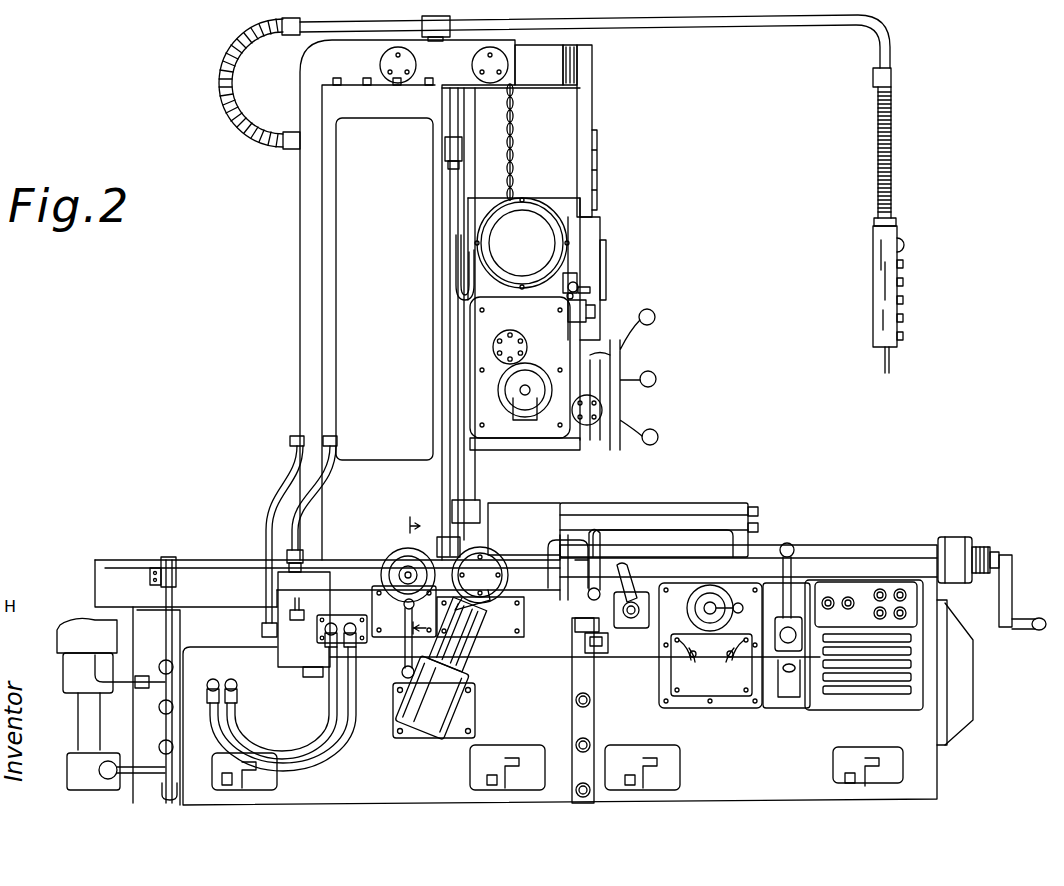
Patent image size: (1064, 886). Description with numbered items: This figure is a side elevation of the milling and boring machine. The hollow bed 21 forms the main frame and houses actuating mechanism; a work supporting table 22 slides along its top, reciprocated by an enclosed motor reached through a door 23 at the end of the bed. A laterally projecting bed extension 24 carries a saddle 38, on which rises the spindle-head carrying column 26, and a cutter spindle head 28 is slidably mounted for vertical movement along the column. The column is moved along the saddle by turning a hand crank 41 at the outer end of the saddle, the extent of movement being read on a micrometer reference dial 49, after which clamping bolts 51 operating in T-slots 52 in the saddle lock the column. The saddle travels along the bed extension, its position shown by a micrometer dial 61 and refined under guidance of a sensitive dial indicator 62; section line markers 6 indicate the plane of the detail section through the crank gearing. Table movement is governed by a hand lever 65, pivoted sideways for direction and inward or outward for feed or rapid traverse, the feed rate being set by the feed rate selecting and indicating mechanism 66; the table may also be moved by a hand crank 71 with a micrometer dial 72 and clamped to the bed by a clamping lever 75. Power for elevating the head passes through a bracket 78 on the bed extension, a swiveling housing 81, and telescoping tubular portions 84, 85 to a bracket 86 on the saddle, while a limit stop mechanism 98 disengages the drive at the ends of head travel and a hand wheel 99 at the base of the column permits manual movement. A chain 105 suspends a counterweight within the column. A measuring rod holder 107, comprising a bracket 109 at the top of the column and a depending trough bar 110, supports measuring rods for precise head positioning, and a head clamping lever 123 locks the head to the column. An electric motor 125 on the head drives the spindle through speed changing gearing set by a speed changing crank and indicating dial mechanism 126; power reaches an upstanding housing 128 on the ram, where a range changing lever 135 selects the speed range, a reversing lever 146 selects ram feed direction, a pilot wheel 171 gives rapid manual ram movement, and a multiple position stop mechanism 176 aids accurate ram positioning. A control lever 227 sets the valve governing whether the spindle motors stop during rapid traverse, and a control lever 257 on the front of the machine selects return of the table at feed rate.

The bed 21 is at (915, 768).
The work supporting table 22 is at (712, 508).
The door 23 is at (962, 698).
The bed extension 24 is at (150, 798).
The column 26 is at (350, 180).
The spindle head 28 is at (600, 228).
The saddle 38 is at (318, 660).
The hand crank 41 is at (403, 647).
The micrometer reference dial 49 is at (402, 568).
The clamping bolts 51 is at (286, 553).
The T-slots 52 is at (297, 622).
The micrometer dial 61 is at (606, 656).
The sensitive dial indicator 62 is at (592, 672).
The hand lever 65 is at (790, 544).
The feed rate selecting and indicating mechanism 66 is at (708, 590).
The hand crank 71 is at (1035, 616).
The micrometer dial 72 is at (966, 536).
The clamping lever 75 is at (635, 568).
The bracket 78 is at (410, 736).
The housing 81 is at (452, 698).
The tubular portion 84 is at (484, 610).
The tubular portion 85 is at (458, 644).
The bracket 86 is at (525, 625).
The limit stop mechanism 98 is at (452, 506).
The hand wheel 99 is at (596, 532).
The chains 105 is at (516, 132).
The measuring rod holder 107 is at (606, 73).
The bracket 109 is at (582, 44).
The rod carrying bar or trough 110 is at (590, 125).
The head clamping lever 123 is at (590, 320).
The electric motor 125 is at (517, 220).
The speed changing crank and indicating dial mechanism 126 is at (606, 250).
The housing 128 is at (548, 444).
The range changing lever 135 is at (584, 300).
The reversing lever 146 is at (580, 280).
The pilot wheel 171 is at (656, 316).
The multiple position stop mechanism 176 is at (592, 426).
The control lever 227 is at (666, 648).
The control lever 257 is at (711, 665).
The section line 6 is at (424, 575).